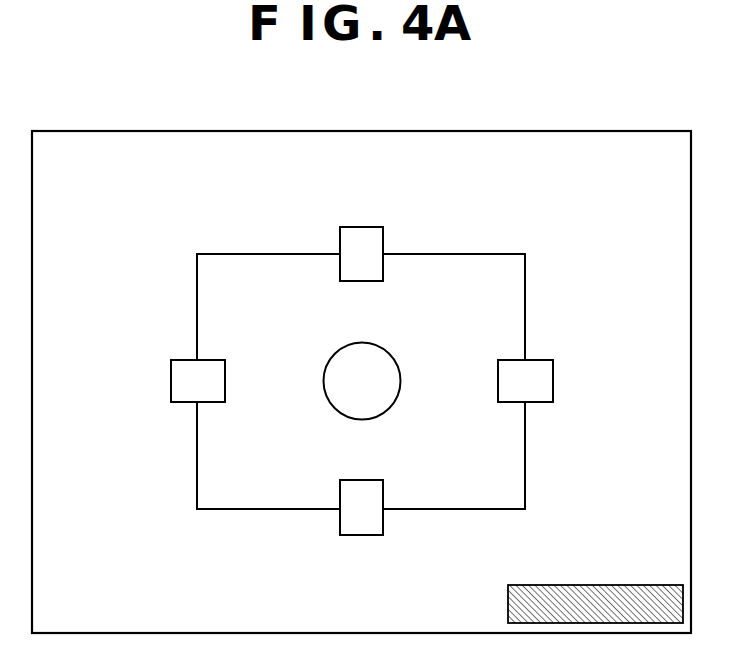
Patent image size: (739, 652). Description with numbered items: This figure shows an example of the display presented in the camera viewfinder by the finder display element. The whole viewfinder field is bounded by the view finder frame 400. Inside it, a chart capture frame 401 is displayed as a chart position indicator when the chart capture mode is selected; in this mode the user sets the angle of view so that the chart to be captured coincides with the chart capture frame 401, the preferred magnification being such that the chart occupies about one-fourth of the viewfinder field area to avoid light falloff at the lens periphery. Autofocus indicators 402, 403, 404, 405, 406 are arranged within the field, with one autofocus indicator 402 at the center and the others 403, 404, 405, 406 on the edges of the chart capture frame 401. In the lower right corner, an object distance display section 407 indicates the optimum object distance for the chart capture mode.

The view finder frame 400 is at (118, 130).
The chart capture frame 401 is at (526, 272).
The autofocus indicator 402 is at (399, 358).
The autofocus indicator 403 is at (362, 226).
The autofocus indicator 404 is at (554, 378).
The autofocus indicator 405 is at (361, 540).
The autofocus indicator 406 is at (170, 378).
The object distance display section 407 is at (590, 584).